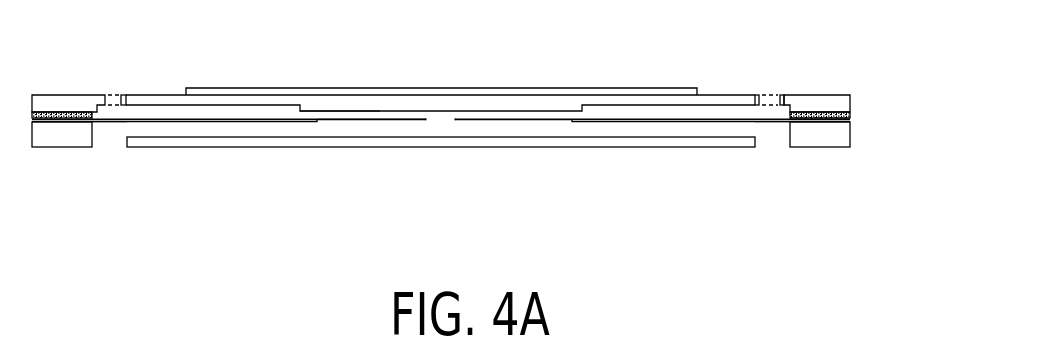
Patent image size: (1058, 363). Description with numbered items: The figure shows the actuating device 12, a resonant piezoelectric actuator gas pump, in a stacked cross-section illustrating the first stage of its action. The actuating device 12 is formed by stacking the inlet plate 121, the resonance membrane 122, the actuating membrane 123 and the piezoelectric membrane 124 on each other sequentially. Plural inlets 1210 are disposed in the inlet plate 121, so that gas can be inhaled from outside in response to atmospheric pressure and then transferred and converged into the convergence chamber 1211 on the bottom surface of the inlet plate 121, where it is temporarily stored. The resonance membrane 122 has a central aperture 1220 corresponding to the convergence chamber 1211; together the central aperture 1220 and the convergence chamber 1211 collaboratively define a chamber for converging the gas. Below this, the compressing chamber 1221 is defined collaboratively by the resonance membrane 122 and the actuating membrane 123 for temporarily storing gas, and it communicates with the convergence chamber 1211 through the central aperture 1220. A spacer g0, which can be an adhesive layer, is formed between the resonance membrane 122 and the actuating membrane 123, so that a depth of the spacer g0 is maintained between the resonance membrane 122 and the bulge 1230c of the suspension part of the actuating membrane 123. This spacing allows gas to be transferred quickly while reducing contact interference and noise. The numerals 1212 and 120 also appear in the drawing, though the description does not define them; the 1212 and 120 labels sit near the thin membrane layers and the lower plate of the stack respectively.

The actuating device 12 is at (897, 33).
The piezoelectric membrane 124 is at (523, 88).
The compressing chamber 1221 is at (362, 104).
The actuating membrane 123 is at (837, 100).
The spacer g0 is at (840, 120).
The inlets 1210 is at (107, 132).
The electrode portion 1212 is at (227, 128).
The bulge 1230c is at (339, 112).
The convergence chamber 1211 is at (393, 128).
The central aperture 1220 is at (442, 120).
The resonance membrane 122 is at (519, 121).
The second substrate 120 is at (712, 149).
The inlet plate 121 is at (812, 132).